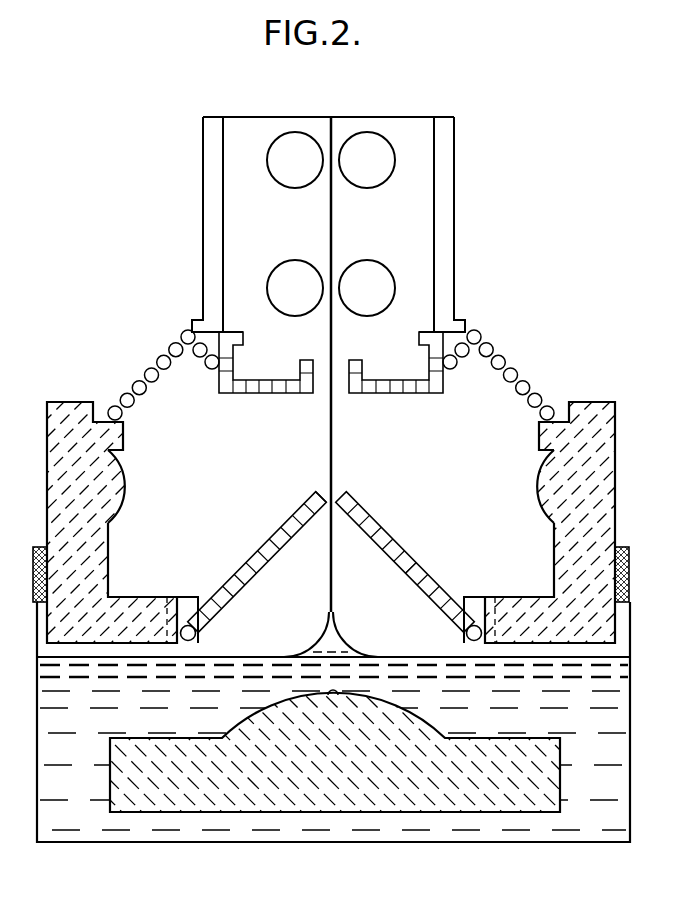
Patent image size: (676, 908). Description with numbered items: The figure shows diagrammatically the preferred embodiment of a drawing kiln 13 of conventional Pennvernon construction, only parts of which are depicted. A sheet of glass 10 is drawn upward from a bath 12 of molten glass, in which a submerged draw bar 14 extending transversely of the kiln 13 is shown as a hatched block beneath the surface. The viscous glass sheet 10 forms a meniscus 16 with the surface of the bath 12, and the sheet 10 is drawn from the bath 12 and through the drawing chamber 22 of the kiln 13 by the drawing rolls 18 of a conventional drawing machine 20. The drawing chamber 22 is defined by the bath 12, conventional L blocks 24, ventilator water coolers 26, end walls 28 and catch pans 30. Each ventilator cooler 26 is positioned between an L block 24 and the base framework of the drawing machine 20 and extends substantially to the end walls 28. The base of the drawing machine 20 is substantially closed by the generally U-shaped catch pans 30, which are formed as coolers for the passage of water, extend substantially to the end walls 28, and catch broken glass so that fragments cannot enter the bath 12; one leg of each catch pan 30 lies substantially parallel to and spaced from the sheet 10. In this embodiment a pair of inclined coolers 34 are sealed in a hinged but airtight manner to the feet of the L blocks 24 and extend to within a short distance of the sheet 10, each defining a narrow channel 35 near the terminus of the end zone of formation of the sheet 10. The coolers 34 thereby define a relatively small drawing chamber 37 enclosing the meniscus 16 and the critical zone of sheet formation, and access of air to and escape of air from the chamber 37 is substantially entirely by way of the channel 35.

The sheet of glass 10 is at (329, 454).
The bath 12 is at (414, 657).
The drawing kiln 13 is at (121, 389).
The block 14 is at (240, 810).
The meniscus 16 is at (346, 634).
The drawing rolls 18 is at (352, 143).
The drawing machine 20 is at (428, 220).
The drawing chamber 22 is at (489, 406).
The L blocks 24 is at (123, 490).
The ventilator water coolers 26 is at (176, 348).
The end walls 28 is at (444, 462).
The catch pans 30 is at (286, 374).
The inclined coolers 34 is at (284, 524).
The narrow channel 35 is at (326, 494).
The drawing chamber 37 is at (406, 589).